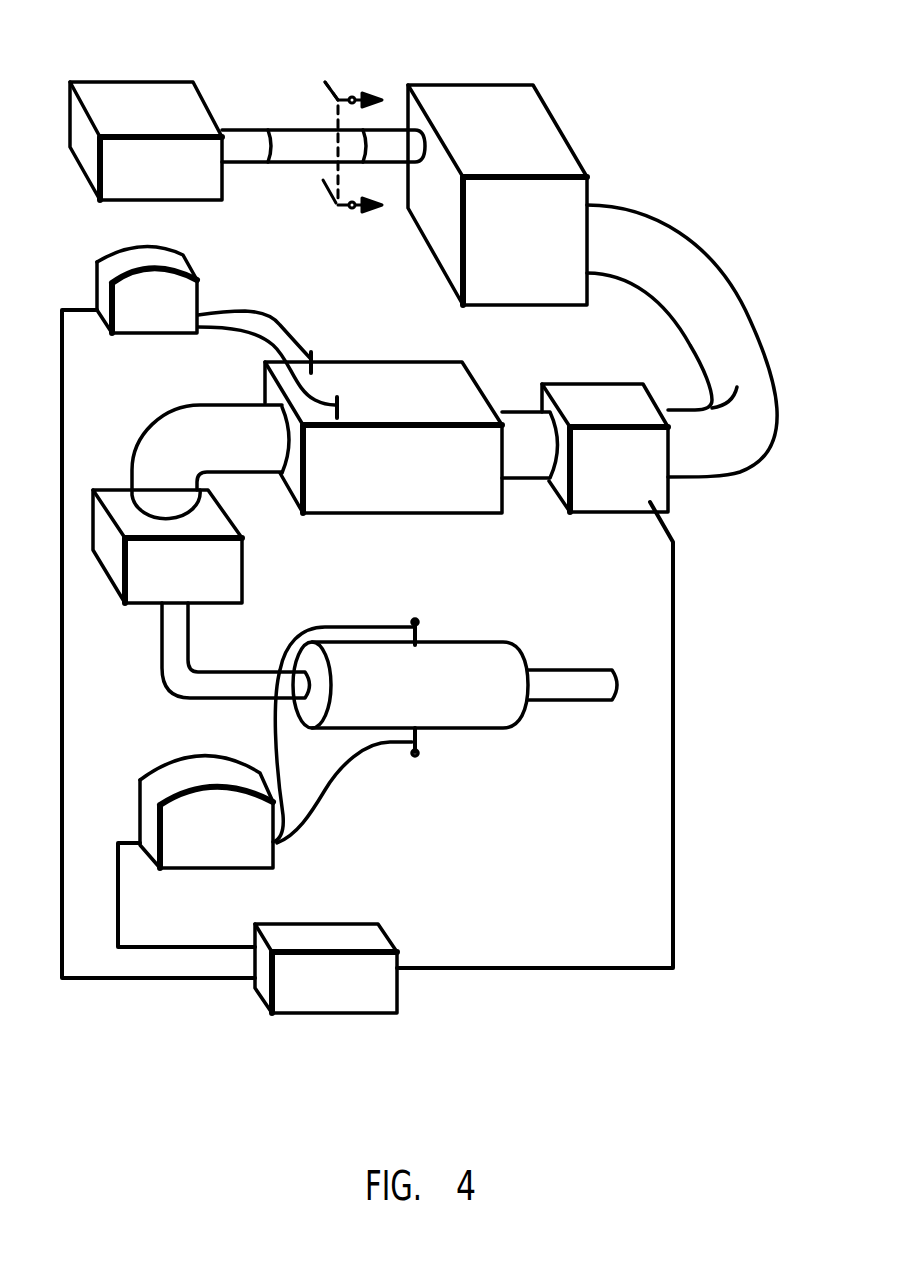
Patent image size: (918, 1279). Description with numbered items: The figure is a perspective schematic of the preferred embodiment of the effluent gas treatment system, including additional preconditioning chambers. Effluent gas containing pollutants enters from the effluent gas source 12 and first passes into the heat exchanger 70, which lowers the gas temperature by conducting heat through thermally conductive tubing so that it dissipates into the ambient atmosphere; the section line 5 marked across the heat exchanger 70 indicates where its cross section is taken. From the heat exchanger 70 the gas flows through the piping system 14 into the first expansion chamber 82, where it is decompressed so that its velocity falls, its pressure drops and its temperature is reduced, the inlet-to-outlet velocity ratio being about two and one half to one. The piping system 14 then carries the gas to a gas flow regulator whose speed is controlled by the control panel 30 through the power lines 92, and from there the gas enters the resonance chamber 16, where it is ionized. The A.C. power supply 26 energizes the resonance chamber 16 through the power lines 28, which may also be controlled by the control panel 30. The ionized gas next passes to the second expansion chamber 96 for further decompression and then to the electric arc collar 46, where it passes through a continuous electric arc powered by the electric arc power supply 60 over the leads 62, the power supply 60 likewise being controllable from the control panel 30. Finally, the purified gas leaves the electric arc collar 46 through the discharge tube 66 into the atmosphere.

The effluent gas source 12 is at (138, 82).
The heat exchanger 70 is at (297, 147).
The section line 5- 5 is at (345, 153).
The first expansion chamber 82 is at (537, 140).
The piping system 14 is at (698, 287).
The resonance chamber 16 is at (438, 477).
The power lines 28 is at (297, 262).
The A.C. power supply 26 is at (135, 290).
The second expansion chamber 96 is at (117, 562).
The electric arc collar 46 is at (457, 697).
The discharge tube 66 is at (578, 687).
The electrical leads 62 is at (347, 627).
The electric arc power supply 60 is at (183, 817).
The control panel 30 is at (322, 990).
The power lines 92 is at (677, 612).